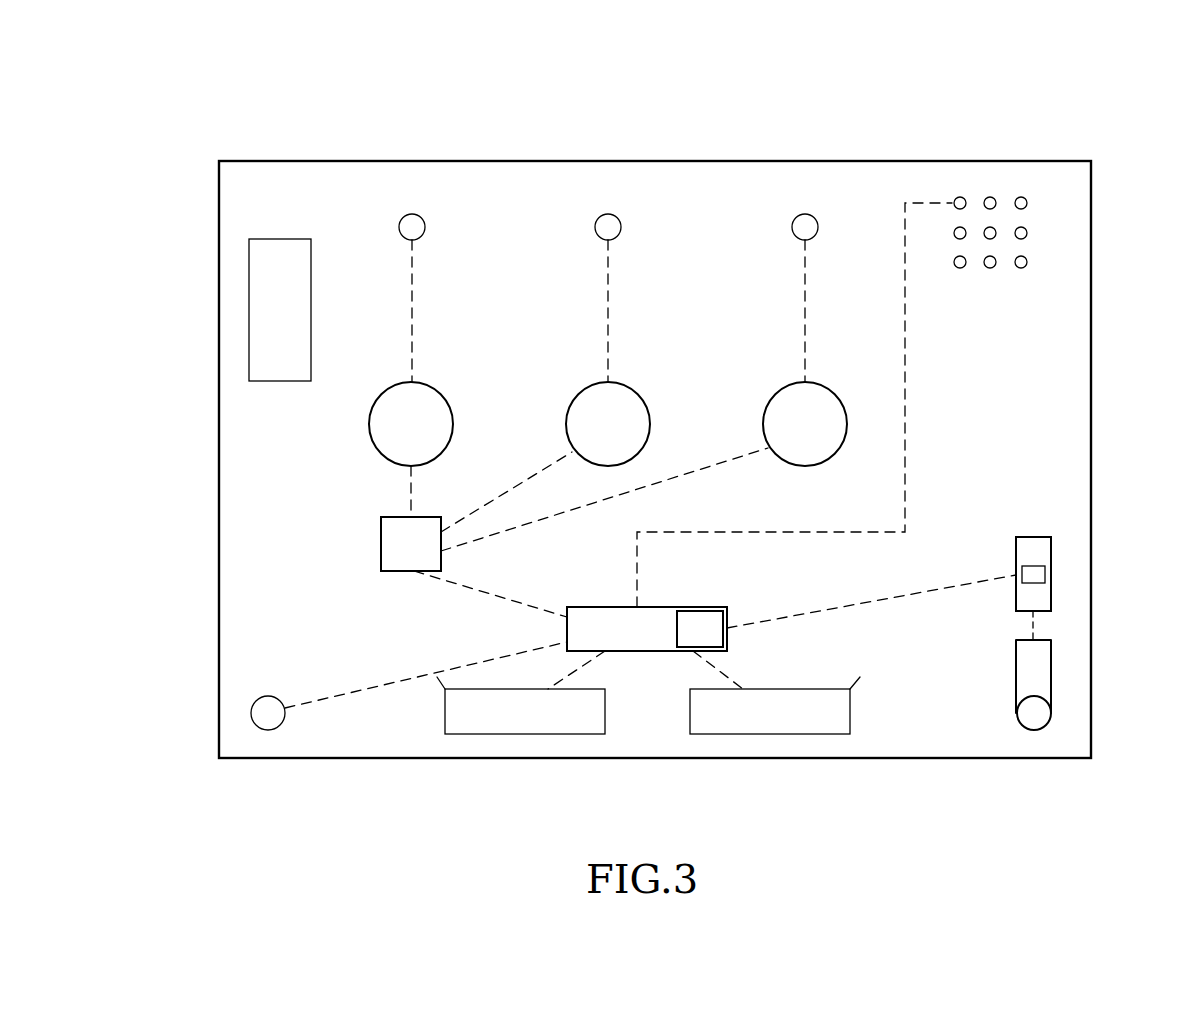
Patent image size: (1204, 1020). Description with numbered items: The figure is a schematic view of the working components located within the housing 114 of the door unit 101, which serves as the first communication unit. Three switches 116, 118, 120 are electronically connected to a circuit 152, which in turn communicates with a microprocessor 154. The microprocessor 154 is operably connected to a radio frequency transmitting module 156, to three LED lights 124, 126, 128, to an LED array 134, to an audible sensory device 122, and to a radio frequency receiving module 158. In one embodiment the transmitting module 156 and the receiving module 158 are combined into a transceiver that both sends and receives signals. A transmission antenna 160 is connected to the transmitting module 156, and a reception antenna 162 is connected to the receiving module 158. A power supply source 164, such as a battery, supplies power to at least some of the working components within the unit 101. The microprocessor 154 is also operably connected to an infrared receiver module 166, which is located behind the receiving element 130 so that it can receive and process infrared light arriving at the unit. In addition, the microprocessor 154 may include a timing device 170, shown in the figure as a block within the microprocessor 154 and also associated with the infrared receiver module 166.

The door unit 101 is at (1072, 112).
The housing 114 is at (1092, 232).
The switch 116 is at (369, 421).
The switch 118 is at (567, 418).
The switch 120 is at (765, 418).
The audible sensory device 122 is at (279, 729).
The LED light 124 is at (412, 213).
The LED light 126 is at (608, 213).
The LED light 128 is at (805, 213).
The receiving element 130 is at (1051, 720).
The LED array 134 is at (990, 196).
The circuit 152 is at (381, 540).
The microprocessor 154 is at (627, 651).
The radio frequency transmitting module 156 is at (515, 734).
The radio frequency receiving module 158 is at (770, 734).
The transmission antenna 160 is at (440, 685).
The reception antenna 162 is at (860, 675).
The power supply source 164 is at (249, 320).
The infrared receiver module 166 is at (1051, 672).
The timing device 170 is at (677, 632).